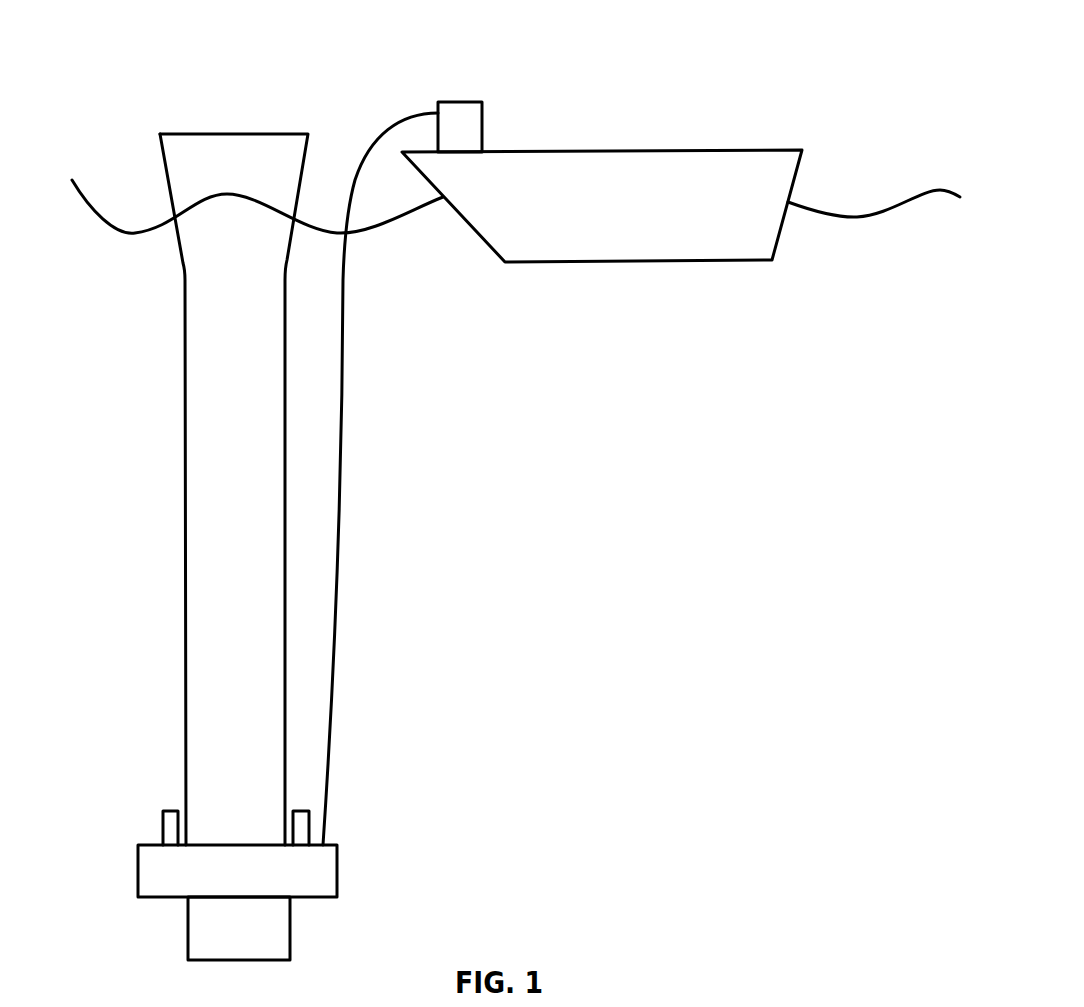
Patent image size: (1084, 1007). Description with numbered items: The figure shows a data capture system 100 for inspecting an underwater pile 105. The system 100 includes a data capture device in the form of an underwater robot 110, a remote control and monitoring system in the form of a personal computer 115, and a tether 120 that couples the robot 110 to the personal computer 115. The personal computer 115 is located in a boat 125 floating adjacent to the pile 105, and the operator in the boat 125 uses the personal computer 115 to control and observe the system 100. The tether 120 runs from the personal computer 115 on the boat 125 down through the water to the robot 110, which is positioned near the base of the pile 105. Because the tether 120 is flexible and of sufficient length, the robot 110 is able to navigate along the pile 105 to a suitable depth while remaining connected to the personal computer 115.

The data capture system 100 is at (200, 84).
The underwater pile 105 is at (203, 437).
The underwater robot 110 is at (175, 869).
The personal computer 115 is at (450, 123).
The tether 120 is at (340, 503).
The boat 125 is at (595, 150).